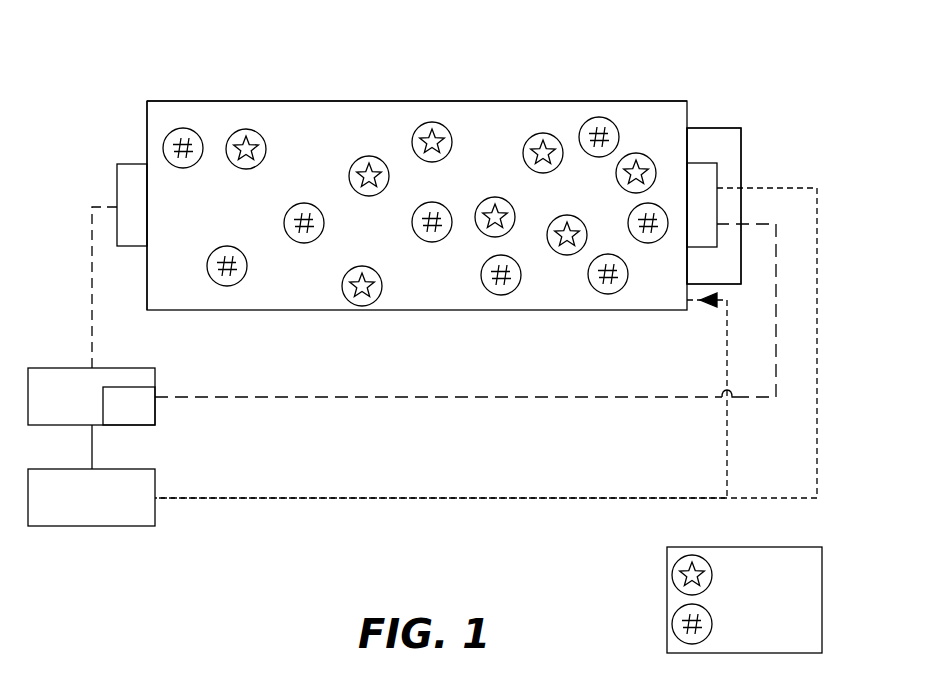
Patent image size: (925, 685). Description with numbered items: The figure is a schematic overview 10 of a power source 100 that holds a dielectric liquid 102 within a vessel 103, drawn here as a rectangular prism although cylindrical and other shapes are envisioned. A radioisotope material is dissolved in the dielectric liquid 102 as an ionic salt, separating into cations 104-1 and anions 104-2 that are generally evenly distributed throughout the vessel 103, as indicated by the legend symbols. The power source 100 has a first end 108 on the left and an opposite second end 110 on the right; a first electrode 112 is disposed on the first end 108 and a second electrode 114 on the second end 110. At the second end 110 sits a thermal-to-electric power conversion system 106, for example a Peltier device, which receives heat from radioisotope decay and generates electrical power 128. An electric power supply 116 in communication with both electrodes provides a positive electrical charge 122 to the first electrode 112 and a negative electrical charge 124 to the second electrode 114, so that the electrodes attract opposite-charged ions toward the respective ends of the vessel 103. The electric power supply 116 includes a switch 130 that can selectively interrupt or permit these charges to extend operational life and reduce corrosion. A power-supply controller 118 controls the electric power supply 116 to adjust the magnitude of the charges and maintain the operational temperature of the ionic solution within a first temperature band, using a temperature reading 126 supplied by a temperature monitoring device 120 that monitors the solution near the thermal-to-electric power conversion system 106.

The schematic overview 10 is at (207, 62).
The power source 100 is at (140, 94).
The dielectric liquid 102 is at (336, 138).
The vessel 103 is at (417, 101).
The cations 104-1 is at (525, 358).
The anions 104-2 is at (493, 380).
The thermal-to-electric power conversion system 106 is at (741, 145).
The first end 108 is at (135, 140).
The second end 110 is at (703, 110).
The first electrode 112 is at (117, 183).
The second electrode 114 is at (717, 177).
The electric power supply 116 is at (91, 418).
The power-supply controller 118 is at (91, 497).
The temperature monitoring device 120 is at (697, 300).
The positive electrical charge 122 is at (92, 288).
The negative electrical charge 124 is at (458, 397).
The temperature reading 126 is at (727, 453).
The electrical power 128 is at (817, 451).
The switch 130 is at (129, 406).